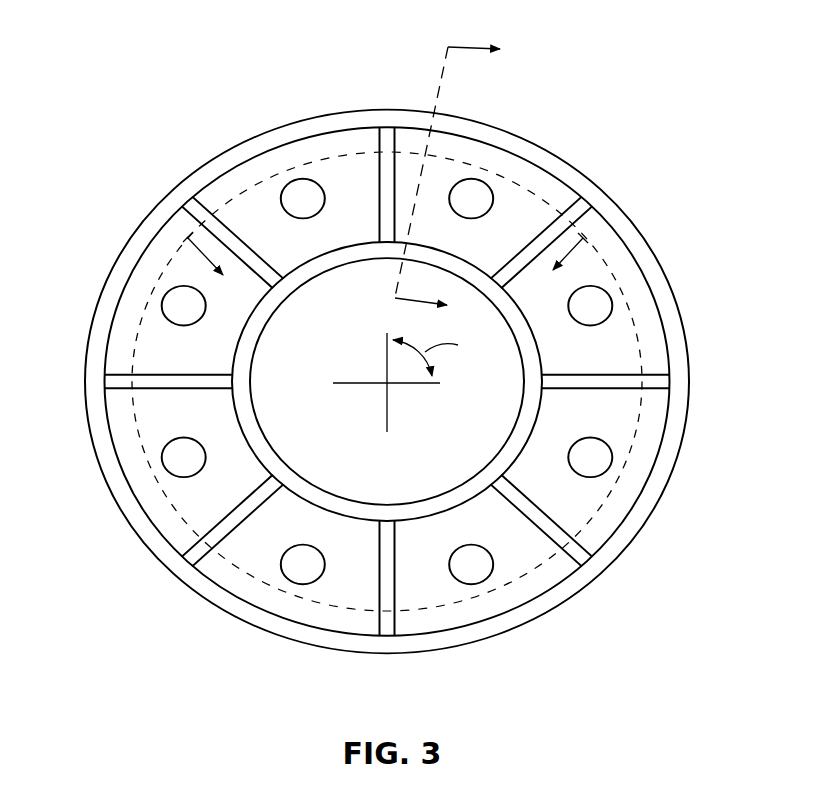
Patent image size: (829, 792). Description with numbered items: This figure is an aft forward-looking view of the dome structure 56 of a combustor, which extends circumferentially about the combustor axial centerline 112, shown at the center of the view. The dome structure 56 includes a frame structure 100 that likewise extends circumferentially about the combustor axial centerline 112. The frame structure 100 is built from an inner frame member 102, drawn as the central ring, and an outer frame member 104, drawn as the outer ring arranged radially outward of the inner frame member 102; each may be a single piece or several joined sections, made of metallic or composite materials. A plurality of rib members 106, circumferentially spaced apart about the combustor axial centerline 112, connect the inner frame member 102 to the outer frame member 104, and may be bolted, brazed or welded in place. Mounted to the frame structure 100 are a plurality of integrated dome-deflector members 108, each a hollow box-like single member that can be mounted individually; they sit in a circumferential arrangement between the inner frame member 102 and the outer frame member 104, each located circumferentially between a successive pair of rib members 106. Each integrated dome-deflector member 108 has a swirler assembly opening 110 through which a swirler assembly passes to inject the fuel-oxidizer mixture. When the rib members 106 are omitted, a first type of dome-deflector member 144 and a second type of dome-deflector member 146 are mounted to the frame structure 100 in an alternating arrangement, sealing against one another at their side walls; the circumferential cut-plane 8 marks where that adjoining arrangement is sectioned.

The dome structure 56 is at (563, 63).
The frame structure 100 is at (522, 132).
The inner frame member 102 is at (330, 253).
The outer frame member 104 is at (618, 223).
The rib members 106 is at (380, 133).
The integrated dome-deflector members 108 is at (257, 170).
The swirler assembly opening 110 is at (303, 203).
The combustor axial centerline 112 is at (392, 385).
The first type of dome-deflector member 144 is at (625, 280).
The second type of dome-deflector member 146 is at (650, 425).
The circumferential cut-plane 8 is at (385, 267).